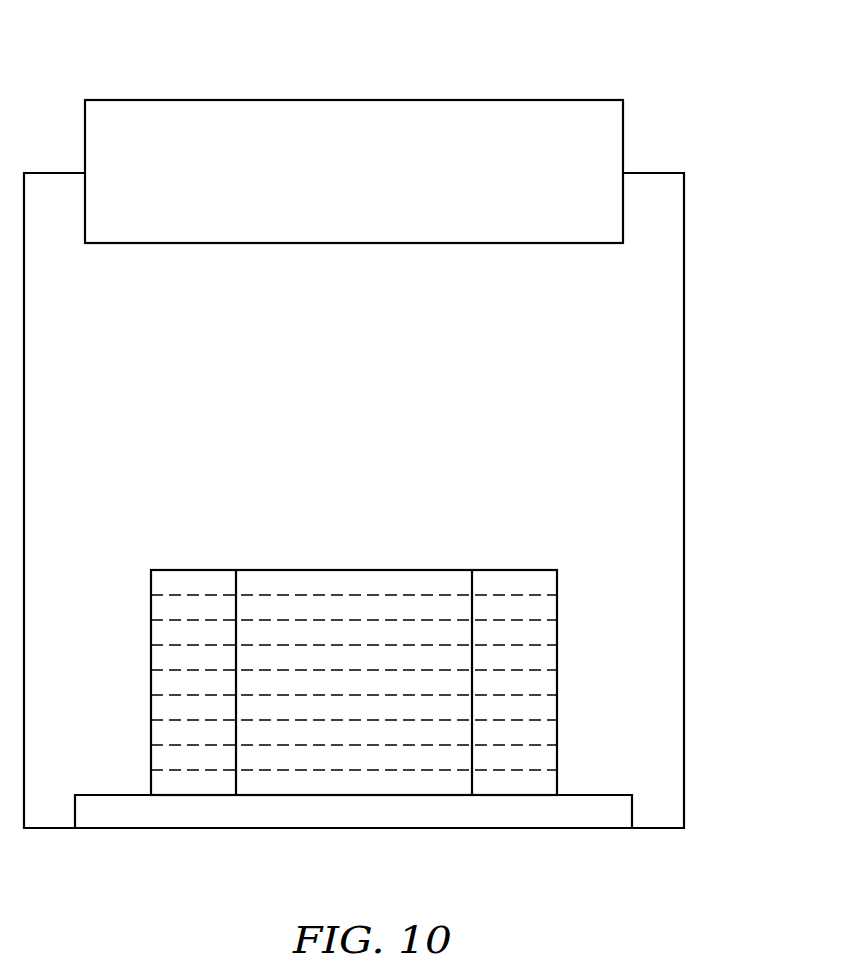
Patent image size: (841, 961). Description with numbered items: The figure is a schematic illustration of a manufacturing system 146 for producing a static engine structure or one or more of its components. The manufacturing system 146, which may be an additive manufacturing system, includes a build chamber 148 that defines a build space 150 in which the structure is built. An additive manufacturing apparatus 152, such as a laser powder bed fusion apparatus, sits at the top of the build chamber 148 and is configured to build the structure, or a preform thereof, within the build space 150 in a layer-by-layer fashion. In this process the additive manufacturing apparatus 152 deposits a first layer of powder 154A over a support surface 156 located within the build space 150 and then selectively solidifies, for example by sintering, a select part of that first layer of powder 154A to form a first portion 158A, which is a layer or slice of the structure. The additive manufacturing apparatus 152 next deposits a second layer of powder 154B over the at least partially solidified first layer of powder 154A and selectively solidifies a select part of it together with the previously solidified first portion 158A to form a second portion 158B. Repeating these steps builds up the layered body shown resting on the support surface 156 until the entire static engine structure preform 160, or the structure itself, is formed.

The manufacturing system 146 is at (682, 130).
The build chamber 148 is at (684, 315).
The build space 150 is at (377, 398).
The additive manufacturing apparatus 152 is at (556, 98).
The first layer of powder 154A is at (557, 782).
The second layer of powder 154B is at (557, 757).
The support surface 156 is at (105, 795).
The first portion 158A is at (473, 781).
The second portion 158B is at (473, 754).
The static engine structure preform 160 is at (400, 570).